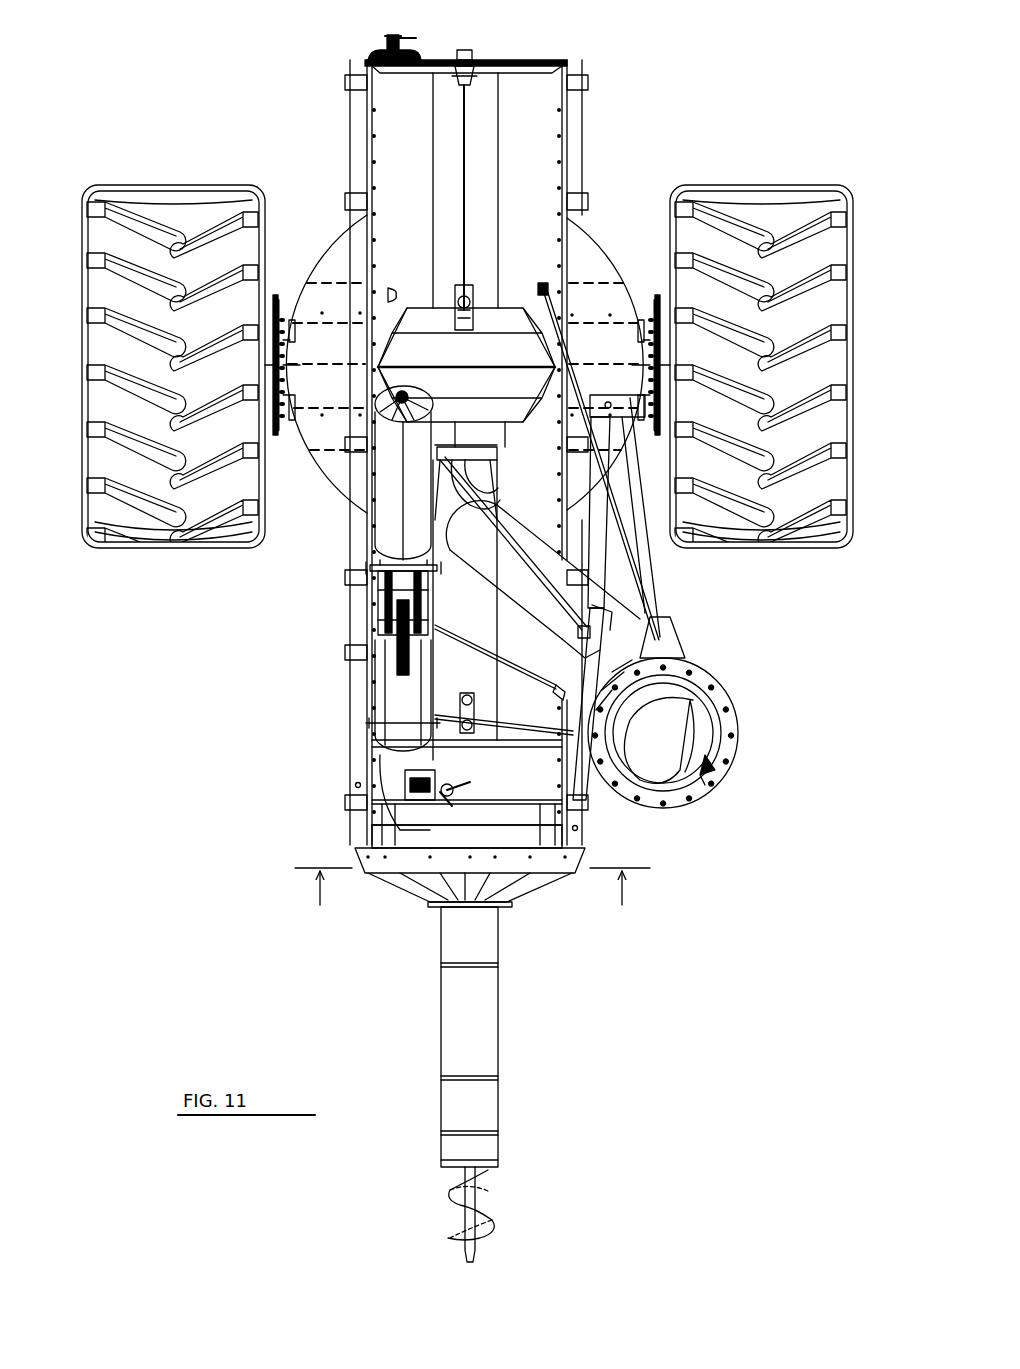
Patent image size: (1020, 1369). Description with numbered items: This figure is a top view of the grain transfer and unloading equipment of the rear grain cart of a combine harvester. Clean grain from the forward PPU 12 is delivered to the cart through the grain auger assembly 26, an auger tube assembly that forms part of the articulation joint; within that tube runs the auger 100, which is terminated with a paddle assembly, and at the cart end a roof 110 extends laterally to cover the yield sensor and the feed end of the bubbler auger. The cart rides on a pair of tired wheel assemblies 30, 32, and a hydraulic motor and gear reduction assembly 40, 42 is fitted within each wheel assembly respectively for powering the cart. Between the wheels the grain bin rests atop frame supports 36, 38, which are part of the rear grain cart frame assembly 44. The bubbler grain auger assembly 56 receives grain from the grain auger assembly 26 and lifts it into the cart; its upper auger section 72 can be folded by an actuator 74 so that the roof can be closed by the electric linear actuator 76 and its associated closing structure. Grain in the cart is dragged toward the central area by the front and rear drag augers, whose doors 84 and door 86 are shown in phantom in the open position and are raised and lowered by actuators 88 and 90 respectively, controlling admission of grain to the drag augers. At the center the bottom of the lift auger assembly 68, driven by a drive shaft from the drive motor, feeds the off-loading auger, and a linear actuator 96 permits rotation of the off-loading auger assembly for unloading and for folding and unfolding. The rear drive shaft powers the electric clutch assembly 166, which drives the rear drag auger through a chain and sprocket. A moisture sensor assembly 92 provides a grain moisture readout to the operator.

The PPU 12 is at (472, 902).
The grain auger assembly 26 is at (496, 1025).
The tired wheel assembly 30 is at (168, 548).
The tired wheel assembly 32 is at (790, 548).
The frame support 36 is at (358, 119).
The frame support 38 is at (578, 110).
The hydraulic motor and gear reduction assembly 40 is at (274, 281).
The hydraulic motor and gear reduction assembly 42 is at (660, 276).
The rear grain cart frame assembly 44 is at (585, 52).
The bubbler grain auger assembly 56 is at (386, 480).
The lift auger assembly 68 is at (494, 500).
The upper auger section 72 is at (385, 529).
The actuator 74 is at (395, 612).
The electric linear actuator 76 is at (385, 688).
The doors 84 is at (487, 629).
The door 86 is at (482, 151).
The actuator 88 is at (478, 698).
The actuator 90 is at (475, 285).
The moisture sensor assembly 92 is at (412, 791).
The linear actuator 96 is at (602, 557).
The auger 100 is at (480, 1206).
The roof 110 is at (495, 838).
The electric clutch assembly 166 is at (370, 50).